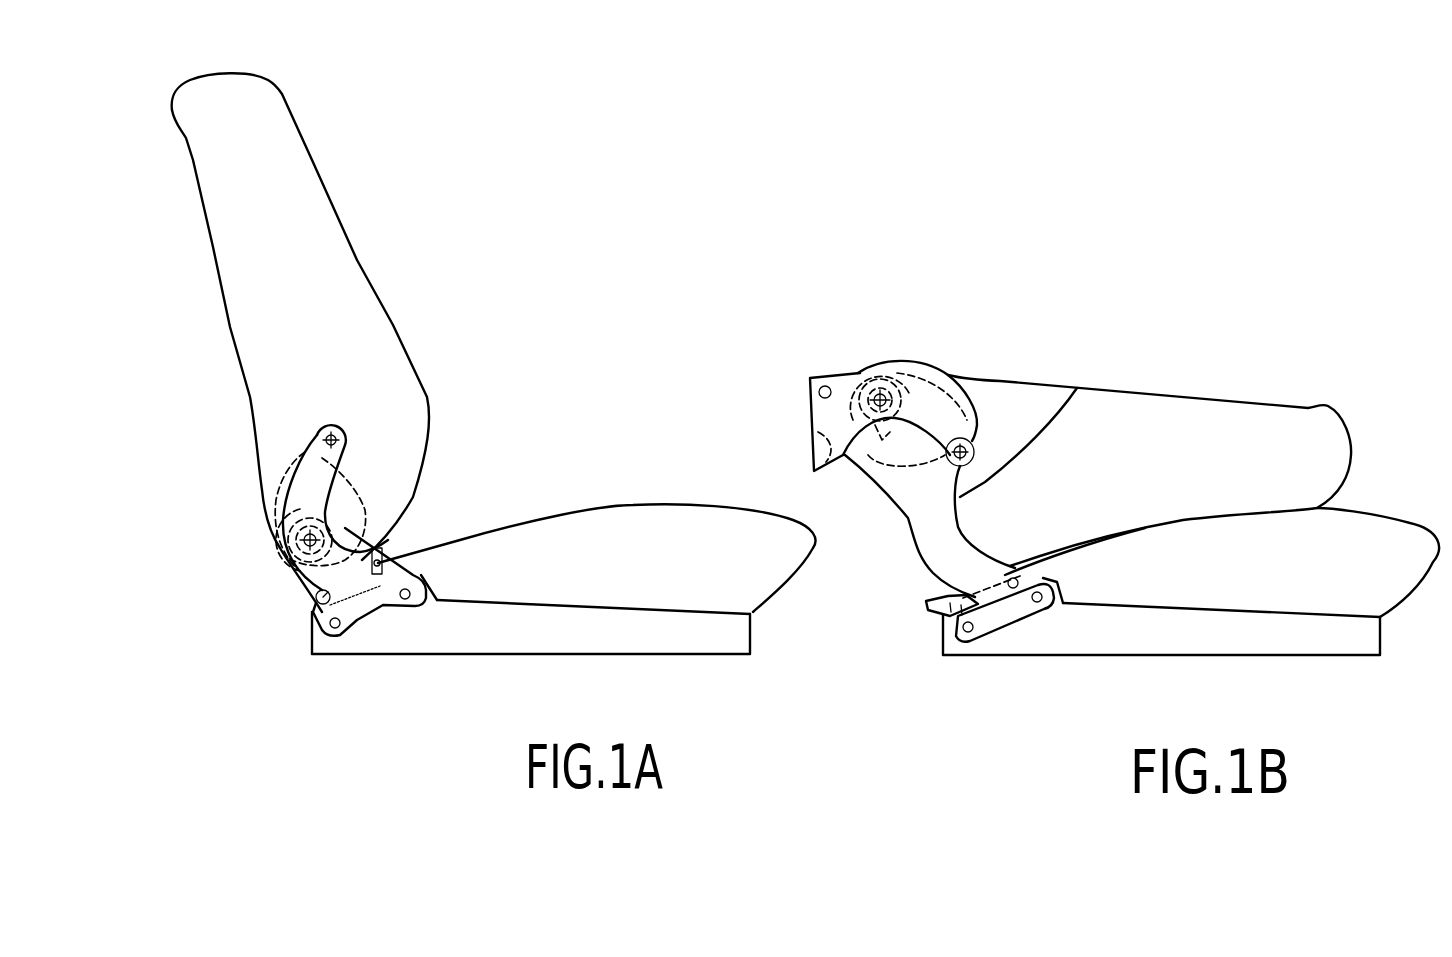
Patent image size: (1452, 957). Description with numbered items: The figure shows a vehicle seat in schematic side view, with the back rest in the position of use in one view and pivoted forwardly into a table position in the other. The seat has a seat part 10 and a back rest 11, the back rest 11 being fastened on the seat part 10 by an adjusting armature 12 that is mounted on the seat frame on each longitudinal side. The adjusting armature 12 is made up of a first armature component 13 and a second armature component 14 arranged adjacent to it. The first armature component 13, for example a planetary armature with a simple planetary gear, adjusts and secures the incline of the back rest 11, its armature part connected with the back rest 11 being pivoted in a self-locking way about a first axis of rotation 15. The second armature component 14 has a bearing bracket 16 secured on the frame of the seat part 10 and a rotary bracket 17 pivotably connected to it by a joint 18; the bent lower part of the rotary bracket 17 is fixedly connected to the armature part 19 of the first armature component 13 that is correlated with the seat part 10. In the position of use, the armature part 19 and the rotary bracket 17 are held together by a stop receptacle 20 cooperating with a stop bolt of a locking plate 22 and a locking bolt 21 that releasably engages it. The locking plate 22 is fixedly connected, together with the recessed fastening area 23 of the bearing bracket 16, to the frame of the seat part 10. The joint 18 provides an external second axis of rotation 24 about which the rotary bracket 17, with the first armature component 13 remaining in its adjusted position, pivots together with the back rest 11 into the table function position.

In FIG. 1A, the seat part 10 is at (628, 572).
In FIG. 1B, the seat part 10 is at (1253, 581).
In FIG. 1A, the back rest 11 is at (300, 282).
In FIG. 1B, the back rest 11 is at (1192, 472).
In FIG. 1A, the adjusting armature 12 is at (245, 582).
In FIG. 1B, the adjusting armature 12 is at (905, 538).
In FIG. 1A, the first armature component 13 is at (368, 500).
In FIG. 1B, the first armature component 13 is at (926, 384).
In FIG. 1A, the second armature component 14 is at (283, 492).
In FIG. 1B, the second armature component 14 is at (958, 502).
In FIG. 1A, the first axis of rotation 15 is at (306, 540).
In FIG. 1B, the first axis of rotation 15 is at (878, 394).
In FIG. 1A, the bearing bracket 16 is at (312, 482).
In FIG. 1B, the bearing bracket 16 is at (940, 557).
In FIG. 1B, the rotary bracket 17 is at (933, 420).
In FIG. 1A, the joint 18 is at (340, 433).
In FIG. 1B, the joint 18 is at (975, 443).
In FIG. 1B, the armature part 19 is at (878, 465).
In FIG. 1A, the stop receptacle 20 is at (377, 576).
In FIG. 1B, the stop receptacle 20 is at (825, 440).
In FIG. 1A, the locking bolt 21 is at (313, 603).
In FIG. 1B, the locking bolt 21 is at (822, 386).
In FIG. 1B, the locking plate 22 is at (960, 616).
In FIG. 1A, the recessed fastening area 23 is at (350, 617).
In FIG. 1B, the recessed fastening area 23 is at (993, 617).
In FIG. 1A, the second axis of rotation 24 is at (318, 440).
In FIG. 1B, the second axis of rotation 24 is at (940, 470).